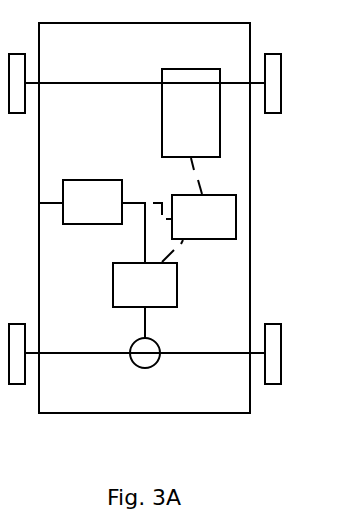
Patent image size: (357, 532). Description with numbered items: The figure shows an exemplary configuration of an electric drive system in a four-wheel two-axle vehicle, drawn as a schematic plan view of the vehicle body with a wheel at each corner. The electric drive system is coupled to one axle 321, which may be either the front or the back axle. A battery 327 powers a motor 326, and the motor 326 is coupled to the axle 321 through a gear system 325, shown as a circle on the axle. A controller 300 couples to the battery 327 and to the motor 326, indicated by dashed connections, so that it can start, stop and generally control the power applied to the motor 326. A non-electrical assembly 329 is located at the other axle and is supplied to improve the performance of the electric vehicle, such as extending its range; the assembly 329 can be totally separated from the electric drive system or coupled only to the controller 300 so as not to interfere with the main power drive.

The controller 300 is at (204, 217).
The axle 321 is at (220, 353).
The gear system 325 is at (143, 352).
The motor 326 is at (145, 270).
The battery 327 is at (80, 202).
The non-electrical assembly 329 is at (191, 113).